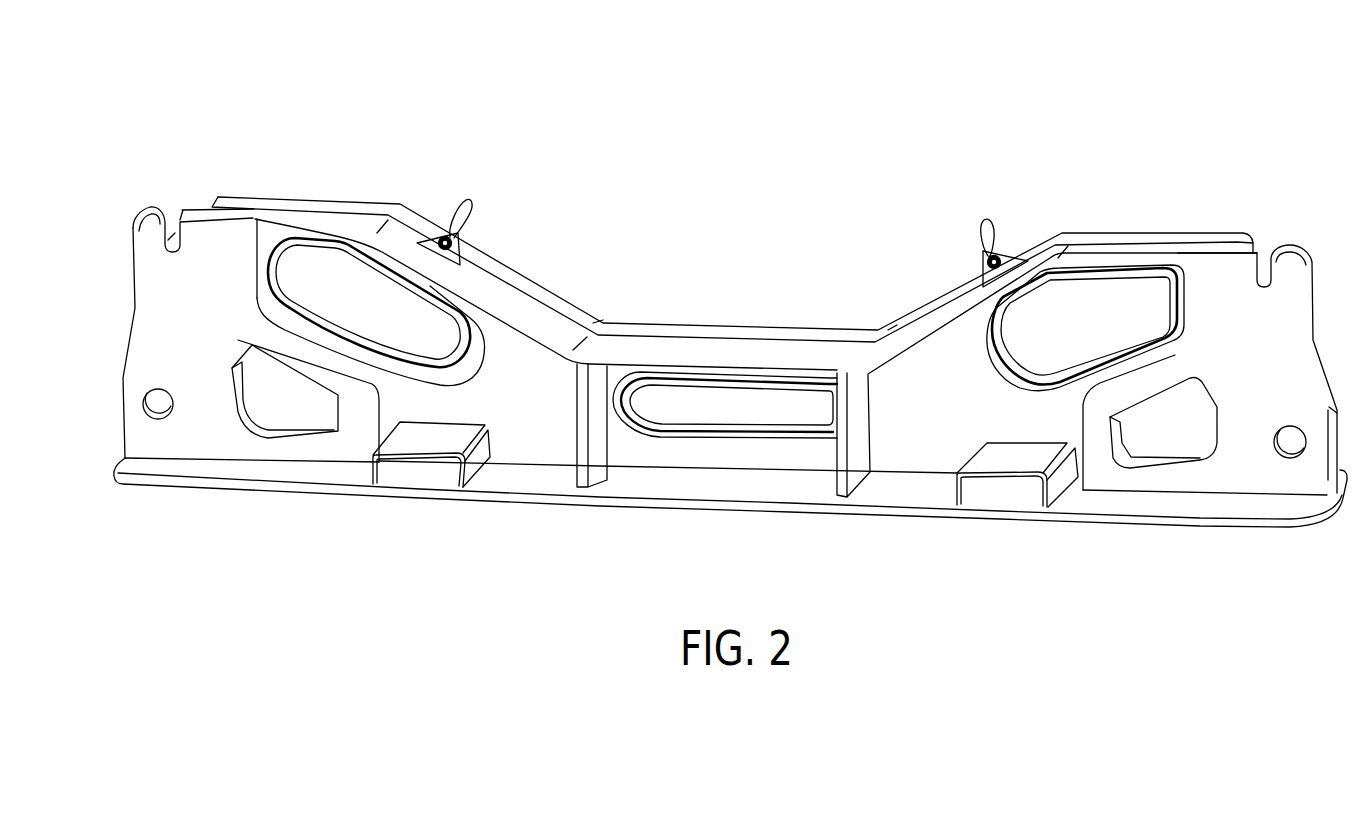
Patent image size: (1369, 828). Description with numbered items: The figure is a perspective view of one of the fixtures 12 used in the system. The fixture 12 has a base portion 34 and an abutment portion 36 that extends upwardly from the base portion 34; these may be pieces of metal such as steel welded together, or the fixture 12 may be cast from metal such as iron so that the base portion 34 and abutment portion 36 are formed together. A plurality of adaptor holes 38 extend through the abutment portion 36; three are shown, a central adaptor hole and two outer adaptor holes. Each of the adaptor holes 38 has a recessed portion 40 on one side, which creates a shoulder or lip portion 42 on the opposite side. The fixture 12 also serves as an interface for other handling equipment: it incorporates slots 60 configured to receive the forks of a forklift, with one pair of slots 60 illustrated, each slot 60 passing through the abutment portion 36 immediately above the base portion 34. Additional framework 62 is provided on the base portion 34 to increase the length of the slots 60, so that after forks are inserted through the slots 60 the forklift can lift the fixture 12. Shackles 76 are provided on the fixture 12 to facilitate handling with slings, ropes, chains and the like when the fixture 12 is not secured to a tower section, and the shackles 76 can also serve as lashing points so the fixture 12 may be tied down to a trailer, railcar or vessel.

The fixture 12 is at (378, 112).
The base portion 34 is at (668, 507).
The abutment portion 36 is at (527, 277).
The adaptor hole 38 is at (436, 335).
The recessed portion 40 is at (453, 353).
The shoulder or lip portion 42 is at (290, 263).
The slot 60 is at (418, 473).
The framework 62 is at (473, 460).
The shackle 76 is at (468, 200).